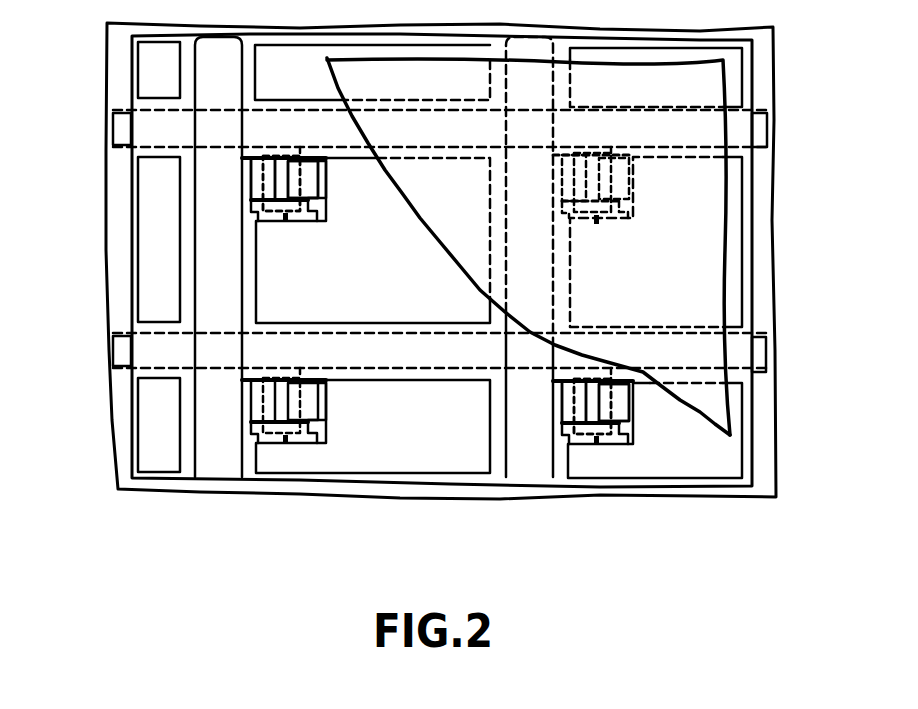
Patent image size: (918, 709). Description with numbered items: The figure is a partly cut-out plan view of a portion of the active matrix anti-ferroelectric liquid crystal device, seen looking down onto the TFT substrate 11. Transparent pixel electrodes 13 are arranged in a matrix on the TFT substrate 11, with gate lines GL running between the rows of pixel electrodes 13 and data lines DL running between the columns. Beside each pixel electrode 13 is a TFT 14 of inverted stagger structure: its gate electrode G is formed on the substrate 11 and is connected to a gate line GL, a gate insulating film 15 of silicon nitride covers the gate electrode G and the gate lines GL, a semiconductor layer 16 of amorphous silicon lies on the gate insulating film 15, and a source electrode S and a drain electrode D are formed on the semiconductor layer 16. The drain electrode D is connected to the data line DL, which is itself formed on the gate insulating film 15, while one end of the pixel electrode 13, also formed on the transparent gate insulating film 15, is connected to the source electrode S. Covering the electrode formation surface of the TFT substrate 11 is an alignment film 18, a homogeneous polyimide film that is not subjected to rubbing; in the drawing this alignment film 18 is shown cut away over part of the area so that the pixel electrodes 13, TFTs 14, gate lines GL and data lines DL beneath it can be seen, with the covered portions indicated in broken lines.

The TFT substrate 11 is at (756, 100).
The pixel electrode 13 is at (266, 82).
The TFT 14 is at (285, 218).
The gate insulating film 15 is at (497, 480).
The semiconductor layer 16 is at (282, 165).
The alignment film 18 is at (705, 198).
The data line DL is at (215, 463).
The gate line GL is at (443, 145).
The drain electrode D is at (263, 182).
The source electrode S is at (316, 180).
The gate electrode G is at (300, 226).